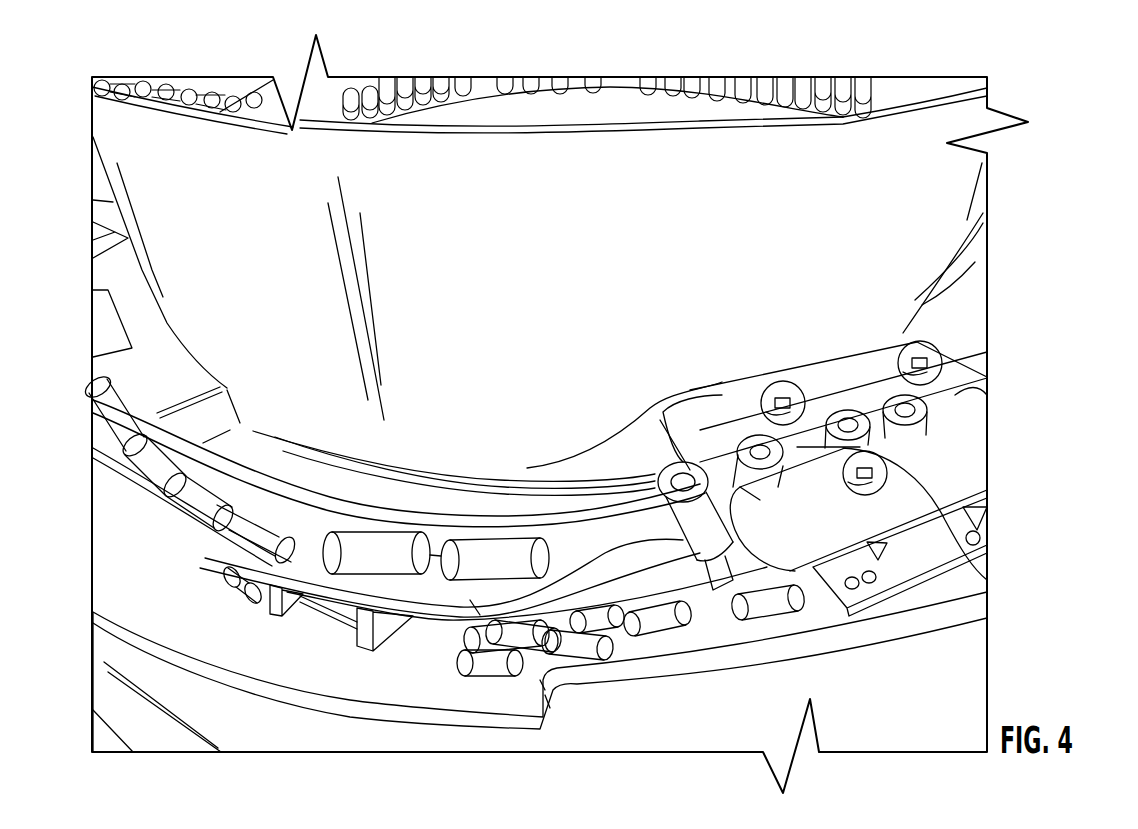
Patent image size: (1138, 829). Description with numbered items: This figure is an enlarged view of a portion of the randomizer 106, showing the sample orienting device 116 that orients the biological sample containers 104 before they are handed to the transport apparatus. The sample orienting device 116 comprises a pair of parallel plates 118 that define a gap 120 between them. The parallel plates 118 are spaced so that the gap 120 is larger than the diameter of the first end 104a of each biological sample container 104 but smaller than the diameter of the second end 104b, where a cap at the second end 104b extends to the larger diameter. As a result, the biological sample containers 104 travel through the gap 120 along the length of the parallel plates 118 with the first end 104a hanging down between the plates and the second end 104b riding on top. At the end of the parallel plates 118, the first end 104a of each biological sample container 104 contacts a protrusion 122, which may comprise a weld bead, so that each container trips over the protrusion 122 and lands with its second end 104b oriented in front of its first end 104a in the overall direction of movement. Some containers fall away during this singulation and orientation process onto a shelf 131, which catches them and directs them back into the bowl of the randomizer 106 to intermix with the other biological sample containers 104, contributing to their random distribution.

The randomizer 106 is at (885, 70).
The sample orienting device 116 is at (993, 364).
The parallel plates 118 is at (597, 478).
The gap 120 is at (972, 556).
The protrusion 122 is at (748, 548).
The biological sample containers 104 is at (252, 547).
The first end 104a is at (297, 545).
The second end 104b is at (203, 513).
The shelf 131 is at (163, 605).